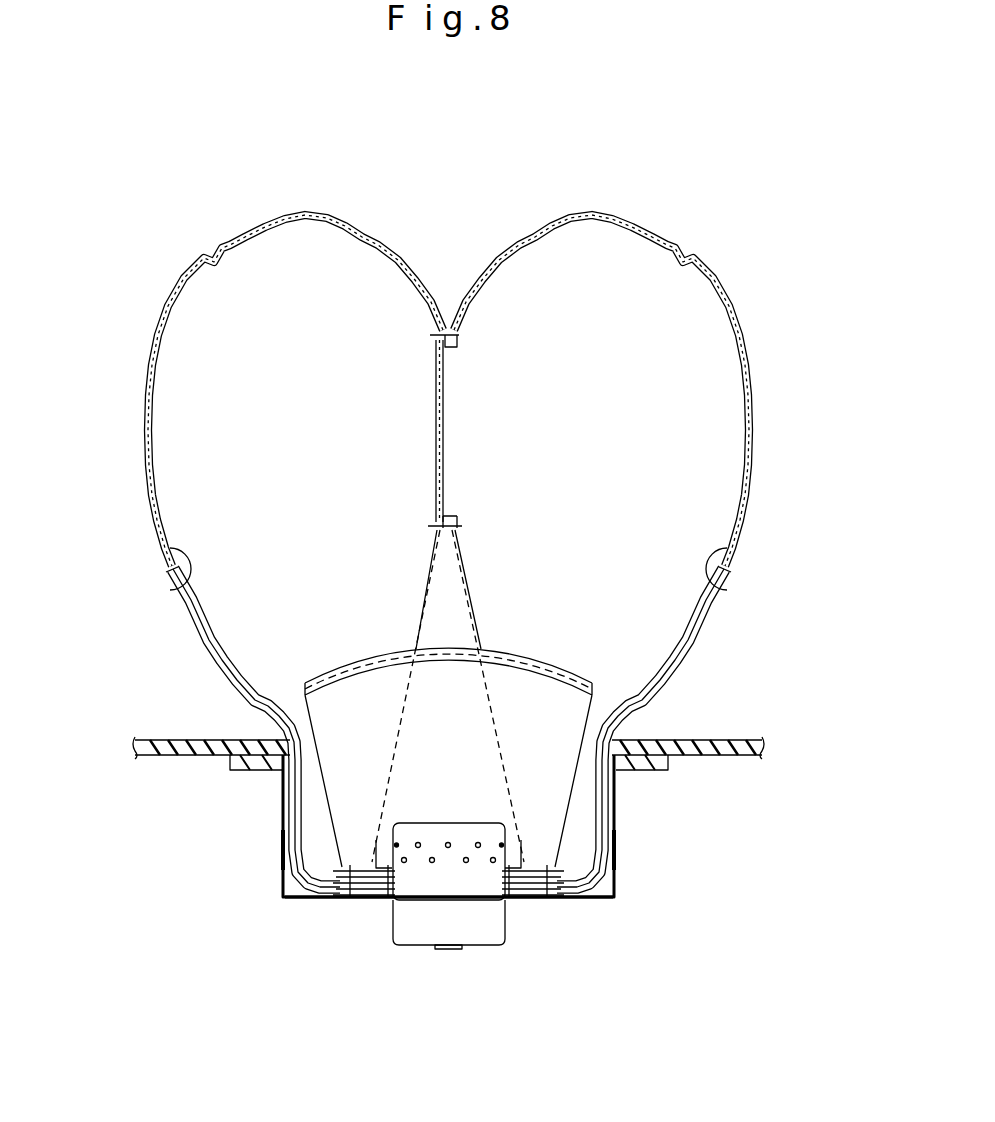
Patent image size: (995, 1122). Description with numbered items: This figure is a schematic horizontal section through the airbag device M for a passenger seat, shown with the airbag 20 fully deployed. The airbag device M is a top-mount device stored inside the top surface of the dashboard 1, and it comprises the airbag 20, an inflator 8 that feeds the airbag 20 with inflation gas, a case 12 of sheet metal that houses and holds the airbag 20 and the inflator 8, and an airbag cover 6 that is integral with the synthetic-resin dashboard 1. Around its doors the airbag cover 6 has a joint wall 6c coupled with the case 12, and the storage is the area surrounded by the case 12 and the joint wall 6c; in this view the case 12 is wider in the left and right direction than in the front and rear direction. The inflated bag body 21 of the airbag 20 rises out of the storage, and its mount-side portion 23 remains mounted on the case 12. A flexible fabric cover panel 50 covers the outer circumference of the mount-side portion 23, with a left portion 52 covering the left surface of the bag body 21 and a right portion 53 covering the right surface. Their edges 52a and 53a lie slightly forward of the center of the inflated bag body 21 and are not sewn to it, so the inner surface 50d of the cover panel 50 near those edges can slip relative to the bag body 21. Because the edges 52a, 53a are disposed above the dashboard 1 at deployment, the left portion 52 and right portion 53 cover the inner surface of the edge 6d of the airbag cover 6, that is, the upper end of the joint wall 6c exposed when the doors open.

The airbag 20 is at (452, 485).
The bag body 21 is at (769, 407).
The cover panel 50 is at (485, 524).
The inner surface 50d is at (170, 548).
The left portion 52 is at (717, 727).
The edge 52a is at (730, 580).
The right portion 53 is at (183, 727).
The edge 53a is at (168, 578).
The dashboard 1 is at (752, 738).
The airbag cover 6 is at (443, 854).
The joint wall 6c is at (627, 833).
The edge 6d is at (260, 768).
The mount-side portion 23 is at (614, 898).
The case 12 is at (596, 914).
The inflator 8 is at (481, 960).
The airbag device M is at (305, 935).